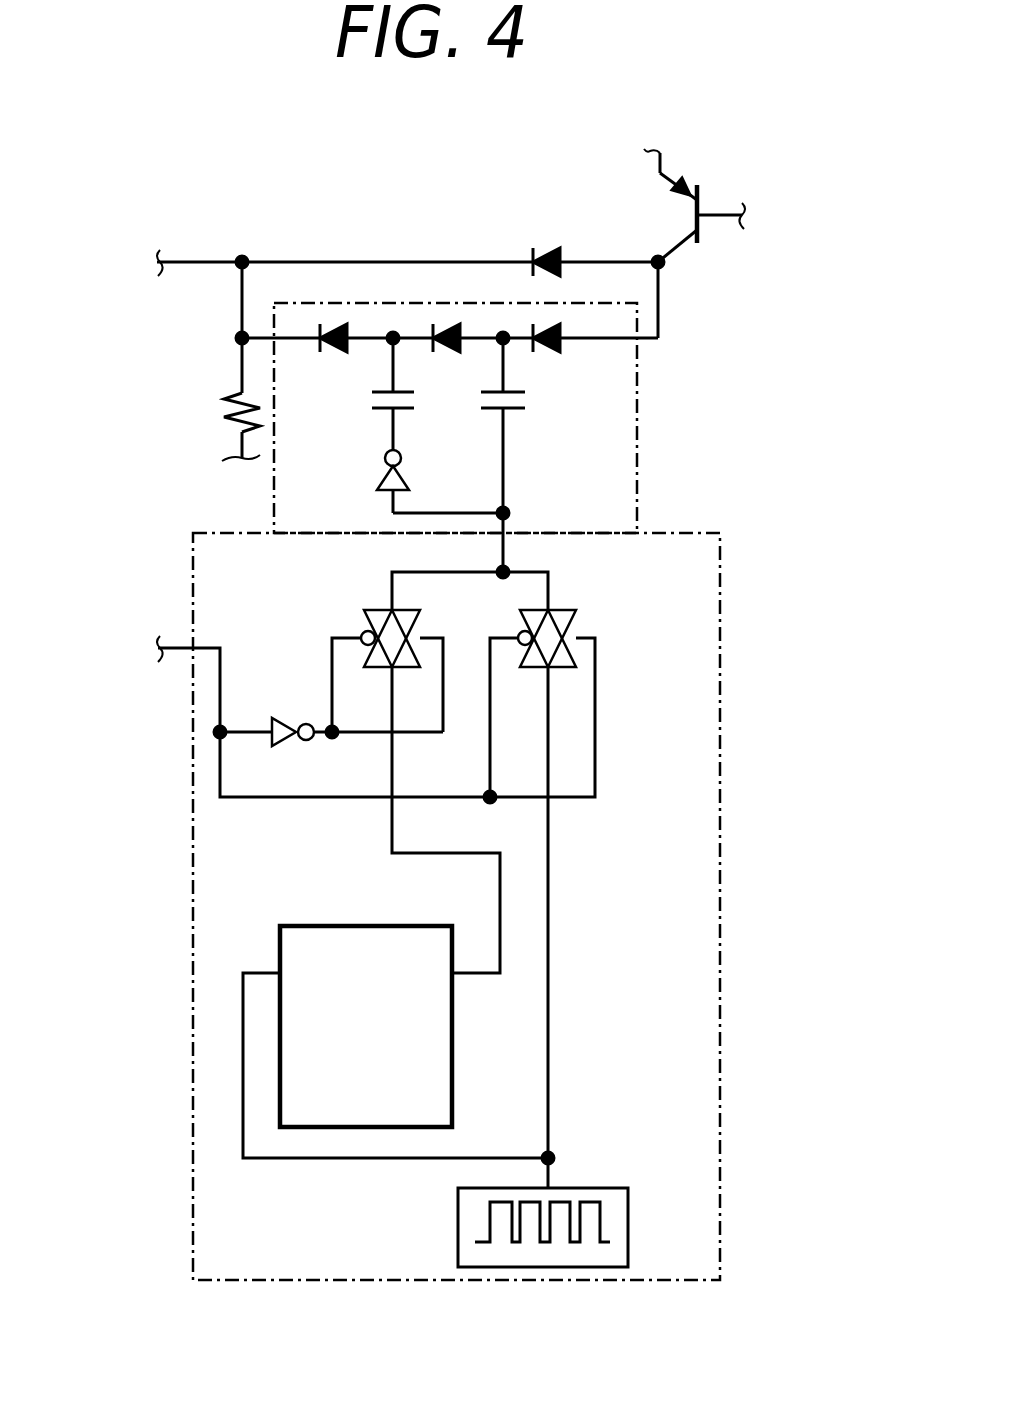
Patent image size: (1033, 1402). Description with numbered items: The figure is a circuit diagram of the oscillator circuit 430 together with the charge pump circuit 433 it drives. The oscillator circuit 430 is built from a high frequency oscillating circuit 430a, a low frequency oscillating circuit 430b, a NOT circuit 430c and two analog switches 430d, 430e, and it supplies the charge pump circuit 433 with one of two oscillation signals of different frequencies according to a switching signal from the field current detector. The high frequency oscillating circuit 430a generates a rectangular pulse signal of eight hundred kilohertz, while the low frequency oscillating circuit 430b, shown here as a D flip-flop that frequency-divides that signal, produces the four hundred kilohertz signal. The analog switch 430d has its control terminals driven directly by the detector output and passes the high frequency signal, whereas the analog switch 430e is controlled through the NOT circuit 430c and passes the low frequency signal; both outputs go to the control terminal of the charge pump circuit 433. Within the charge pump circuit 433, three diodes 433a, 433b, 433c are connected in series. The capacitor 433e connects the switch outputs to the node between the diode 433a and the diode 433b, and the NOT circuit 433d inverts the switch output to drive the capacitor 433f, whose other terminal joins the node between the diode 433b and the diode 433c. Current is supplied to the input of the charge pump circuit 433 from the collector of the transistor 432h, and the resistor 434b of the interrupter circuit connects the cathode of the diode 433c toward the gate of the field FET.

The oscillator circuit 430 is at (720, 1028).
The high frequency oscillating circuit 430a is at (560, 1268).
The low frequency oscillating circuit 430b is at (367, 923).
The NOT circuit 430c is at (290, 747).
The analog switch 430d is at (607, 590).
The analog switch 430e is at (383, 608).
The bipolar transistor 432h is at (677, 217).
The charge pump circuit 433 is at (335, 300).
The diode 433a is at (553, 353).
The diode 433b is at (442, 330).
The diode 433c is at (335, 350).
The NOT circuit 433d is at (372, 470).
The capacitor 433e is at (510, 415).
The capacitor 433f is at (398, 412).
The resistor 434b is at (220, 415).